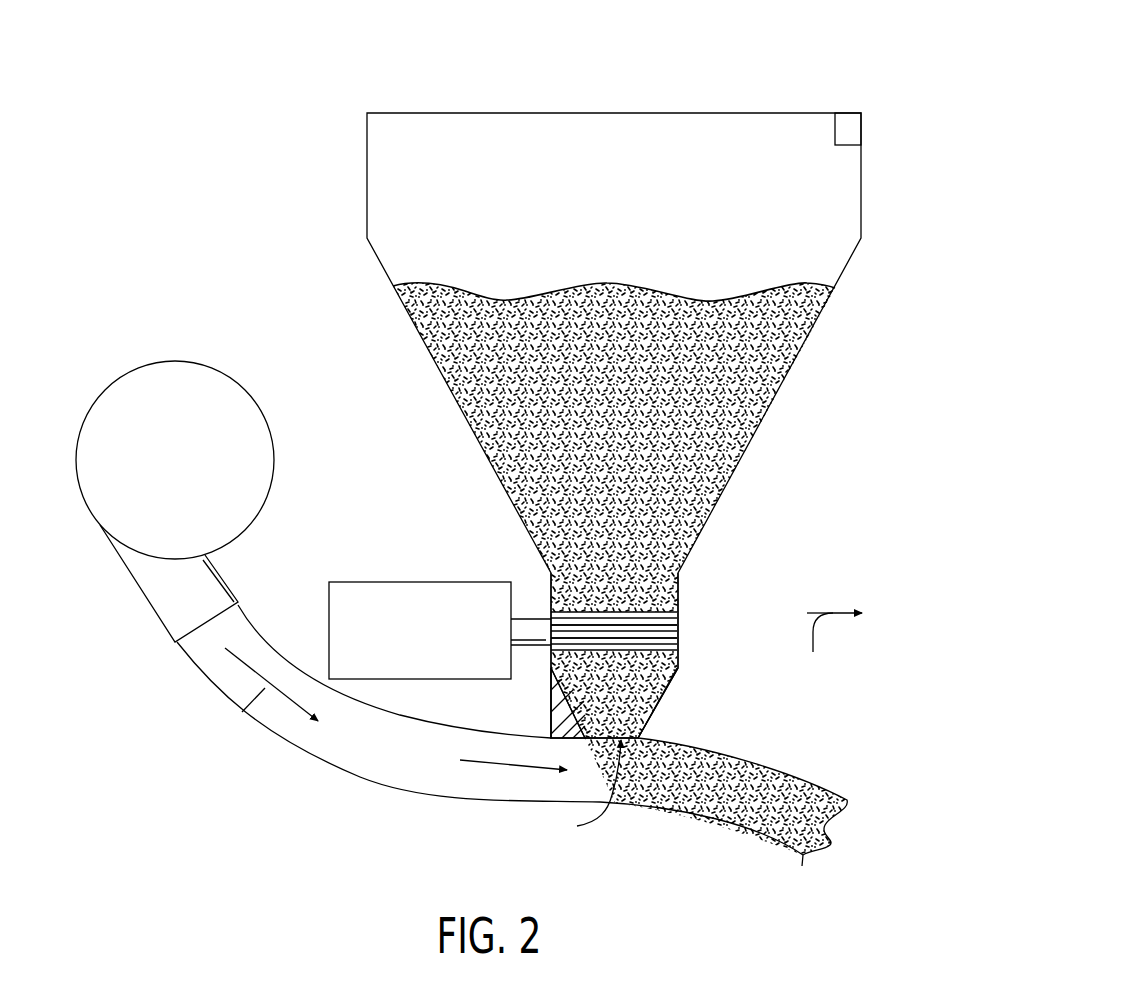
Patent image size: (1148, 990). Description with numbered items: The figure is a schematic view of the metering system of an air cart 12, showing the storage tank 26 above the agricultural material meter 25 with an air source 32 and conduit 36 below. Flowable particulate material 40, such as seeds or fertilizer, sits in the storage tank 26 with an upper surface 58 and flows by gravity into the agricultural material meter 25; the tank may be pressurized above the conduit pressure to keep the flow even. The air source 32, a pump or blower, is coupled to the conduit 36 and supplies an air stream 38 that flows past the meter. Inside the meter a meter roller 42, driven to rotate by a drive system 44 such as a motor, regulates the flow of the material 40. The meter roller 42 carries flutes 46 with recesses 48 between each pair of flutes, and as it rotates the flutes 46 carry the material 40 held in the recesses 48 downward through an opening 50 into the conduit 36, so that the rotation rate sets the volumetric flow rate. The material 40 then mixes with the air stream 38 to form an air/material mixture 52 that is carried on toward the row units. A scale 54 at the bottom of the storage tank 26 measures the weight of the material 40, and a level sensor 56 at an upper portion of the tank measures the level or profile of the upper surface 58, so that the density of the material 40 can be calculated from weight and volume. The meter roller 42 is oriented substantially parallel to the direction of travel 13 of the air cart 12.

The air cart 12 is at (828, 52).
The direction of travel 13 is at (831, 647).
The agricultural material meter 25 is at (690, 576).
The storage tank 26 is at (415, 330).
The air source 32 is at (168, 361).
The conduit 36 is at (350, 772).
The air stream 38 is at (248, 708).
The flowable particulate material 40 is at (767, 360).
The meter roller 42 is at (646, 656).
The drive system 44 is at (418, 582).
The flutes 46 is at (613, 630).
The recesses 48 is at (670, 640).
The opening 50 is at (583, 791).
The air/material mixture 52 is at (740, 813).
The scale 54 is at (557, 716).
The level sensor 56 is at (863, 130).
The upper surface 58 is at (485, 295).